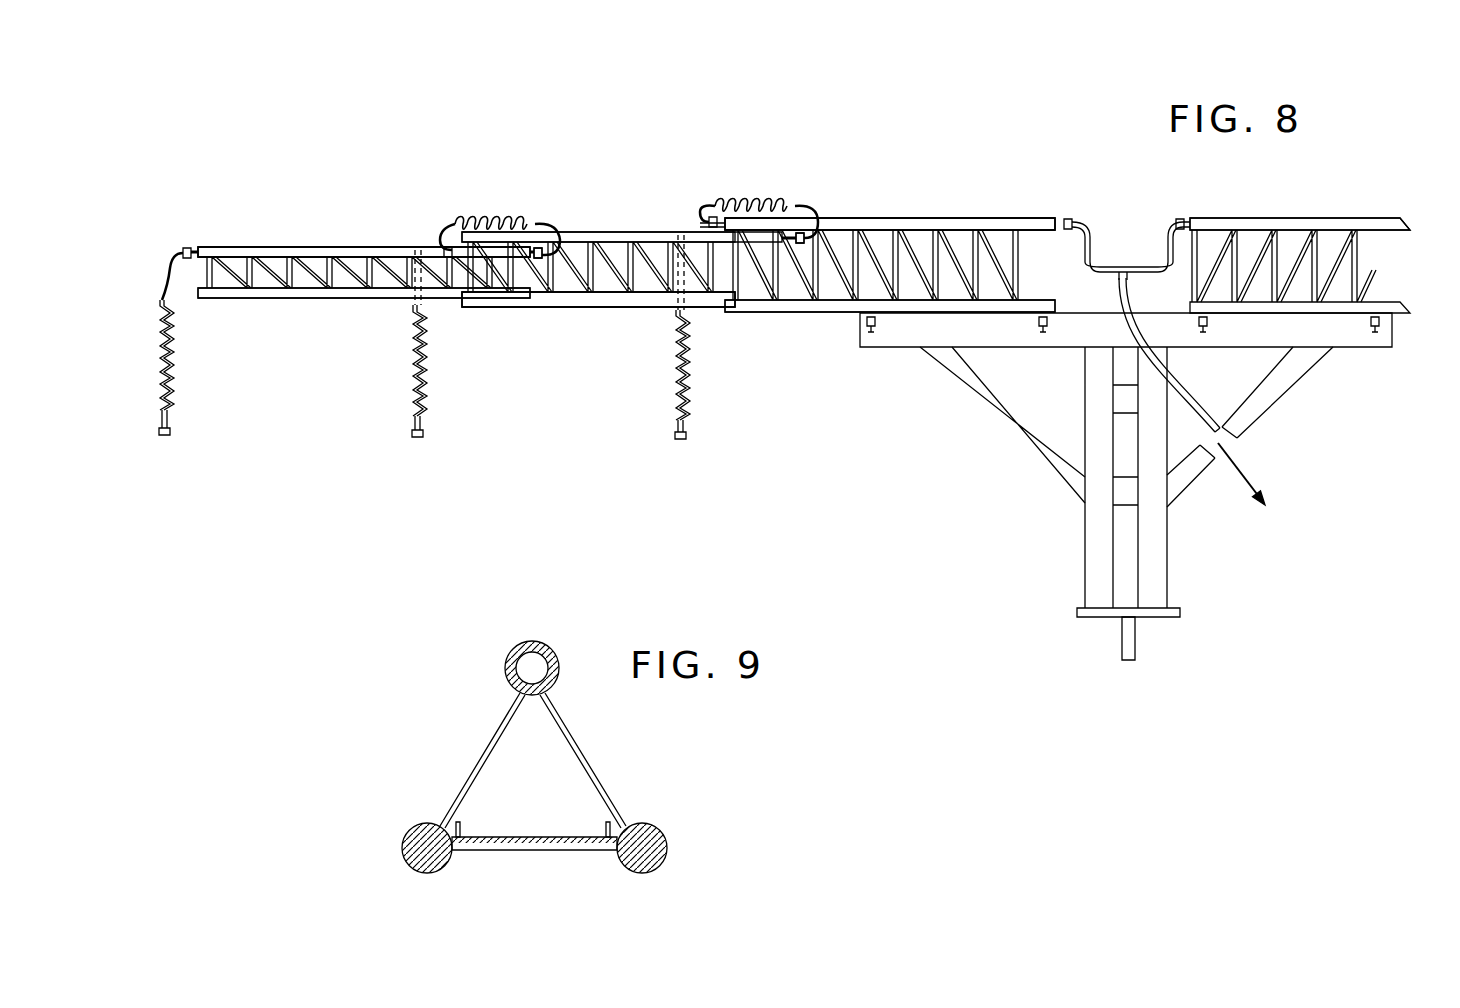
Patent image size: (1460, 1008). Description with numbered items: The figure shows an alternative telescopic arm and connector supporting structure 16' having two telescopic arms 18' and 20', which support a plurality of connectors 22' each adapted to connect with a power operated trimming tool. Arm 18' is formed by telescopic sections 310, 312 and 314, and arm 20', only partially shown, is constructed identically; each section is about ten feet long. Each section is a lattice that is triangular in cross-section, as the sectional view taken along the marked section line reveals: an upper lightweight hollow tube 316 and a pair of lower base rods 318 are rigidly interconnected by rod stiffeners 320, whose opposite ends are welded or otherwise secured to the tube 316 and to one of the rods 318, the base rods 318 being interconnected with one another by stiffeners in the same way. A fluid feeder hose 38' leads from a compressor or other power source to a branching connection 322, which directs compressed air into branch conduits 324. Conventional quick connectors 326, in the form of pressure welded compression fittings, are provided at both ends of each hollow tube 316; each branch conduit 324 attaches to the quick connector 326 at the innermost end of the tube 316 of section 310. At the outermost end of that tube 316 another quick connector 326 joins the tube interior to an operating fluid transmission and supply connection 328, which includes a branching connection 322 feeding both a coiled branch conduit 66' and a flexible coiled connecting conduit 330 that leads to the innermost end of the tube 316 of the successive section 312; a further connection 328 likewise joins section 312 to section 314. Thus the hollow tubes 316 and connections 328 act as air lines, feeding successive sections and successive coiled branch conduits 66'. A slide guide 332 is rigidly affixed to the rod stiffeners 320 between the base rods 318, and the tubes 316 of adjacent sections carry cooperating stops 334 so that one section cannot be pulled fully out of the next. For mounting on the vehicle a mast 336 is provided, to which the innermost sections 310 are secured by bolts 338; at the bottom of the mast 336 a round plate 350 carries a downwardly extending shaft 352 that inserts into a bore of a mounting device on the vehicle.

In FIG. 8, the supporting structure 16' is at (903, 155).
In FIG. 8, the telescopic arm 18' is at (364, 199).
In FIG. 8, the telescopic arm 20' is at (1315, 169).
In FIG. 8, the connector 22' is at (448, 451).
In FIG. 8, the fluid feeder hose 38' is at (1232, 419).
In FIG. 8, the coiled branch conduit 66' is at (452, 333).
In FIG. 8, the telescopic section 310 is at (812, 332).
In FIG. 8, the telescopic section 312 is at (515, 332).
In FIG. 8, the telescopic section 314 is at (262, 312).
In FIG. 8, the hollow tube 316 is at (197, 248).
In FIG. 9, the hollow tube 316 is at (545, 644).
In FIG. 8, the base rod 318 is at (214, 298).
In FIG. 9, the base rod 318 is at (402, 867).
In FIG. 8, the rod stiffener 320 is at (370, 280).
In FIG. 9, the rod stiffener 320 is at (470, 770).
In FIG. 8, the branching connection 322 is at (700, 225).
In FIG. 8, the branch conduit 324 is at (1162, 258).
In FIG. 8, the quick connector 326 is at (713, 220).
In FIG. 8, the operating fluid transmission and supply connection 328 is at (501, 194).
In FIG. 8, the flexible coiled connecting conduit 330 is at (772, 200).
In FIG. 8, the slide guide 332 is at (568, 297).
In FIG. 9, the slide guide 332 is at (590, 850).
In FIG. 8, the stop 334 is at (532, 250).
In FIG. 8, the mast 336 is at (1053, 498).
In FIG. 8, the bolt 338 is at (873, 337).
In FIG. 8, the round plate 350 is at (1077, 612).
In FIG. 8, the shaft 352 is at (1125, 650).